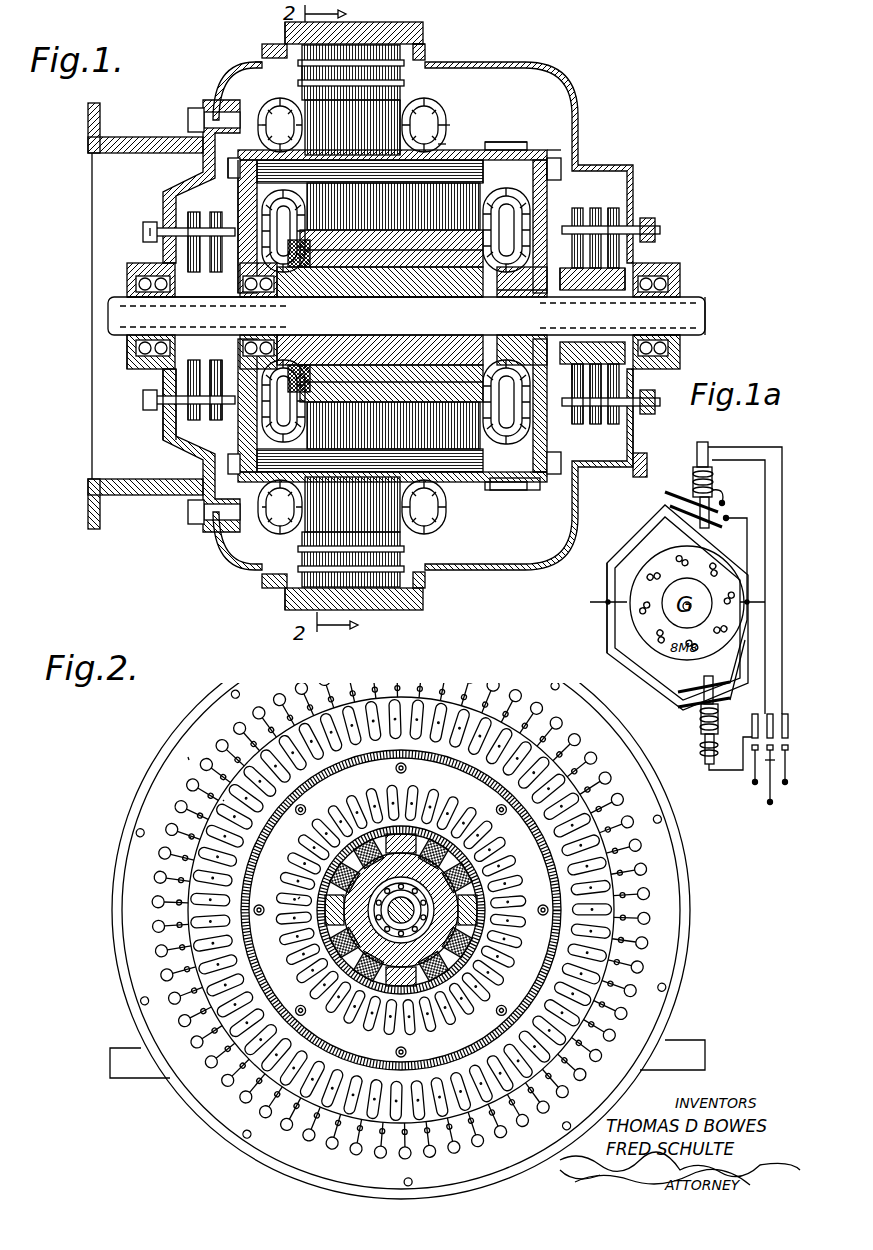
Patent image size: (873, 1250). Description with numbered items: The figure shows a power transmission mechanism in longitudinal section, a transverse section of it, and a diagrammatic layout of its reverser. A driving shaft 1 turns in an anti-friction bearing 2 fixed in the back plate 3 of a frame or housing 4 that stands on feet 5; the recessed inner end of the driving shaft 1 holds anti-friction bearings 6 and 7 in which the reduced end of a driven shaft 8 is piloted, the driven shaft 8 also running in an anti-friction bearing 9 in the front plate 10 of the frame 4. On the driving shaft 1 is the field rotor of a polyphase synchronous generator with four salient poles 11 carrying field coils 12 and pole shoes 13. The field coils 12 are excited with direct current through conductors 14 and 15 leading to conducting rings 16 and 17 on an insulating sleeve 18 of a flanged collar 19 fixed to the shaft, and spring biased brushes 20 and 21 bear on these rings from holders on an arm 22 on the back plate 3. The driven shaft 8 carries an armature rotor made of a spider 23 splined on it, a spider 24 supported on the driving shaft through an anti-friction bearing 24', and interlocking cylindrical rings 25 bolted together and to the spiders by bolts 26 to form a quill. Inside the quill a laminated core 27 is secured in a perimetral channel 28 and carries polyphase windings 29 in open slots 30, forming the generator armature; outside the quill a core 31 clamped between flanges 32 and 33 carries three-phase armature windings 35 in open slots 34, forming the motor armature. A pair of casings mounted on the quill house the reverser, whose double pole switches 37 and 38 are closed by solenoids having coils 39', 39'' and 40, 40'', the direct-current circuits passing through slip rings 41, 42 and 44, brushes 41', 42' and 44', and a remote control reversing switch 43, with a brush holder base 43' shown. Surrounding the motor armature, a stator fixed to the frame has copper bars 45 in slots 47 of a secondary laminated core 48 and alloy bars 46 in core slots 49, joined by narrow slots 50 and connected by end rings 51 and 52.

In FIG. 1, the driving shaft 1 is at (112, 316).
In FIG. 1, the anti-friction bearing 2 is at (130, 345).
In FIG. 1, the back plate 3 is at (160, 378).
In FIG. 1, the frame or housing 4 is at (290, 596).
In FIG. 2, the frame or housing 4 is at (412, 910).
In FIG. 2, the feet 5 is at (132, 1062).
In FIG. 1, the anti-friction bearing 6 is at (365, 298).
In FIG. 2, the anti-friction bearing 6 is at (468, 926).
In FIG. 1, the anti-friction bearing 7 is at (428, 298).
In FIG. 2, the anti-friction bearing 7 is at (470, 860).
In FIG. 1, the driven shaft 8 is at (690, 309).
In FIG. 2, the driven shaft 8 is at (478, 905).
In FIG. 1, the anti-friction bearing 9 is at (680, 352).
In FIG. 1, the front plate 10 is at (640, 450).
In FIG. 1, the salient poles 11 is at (572, 372).
In FIG. 2, the salient poles 11 is at (300, 897).
In FIG. 1, the field coils 12 is at (574, 380).
In FIG. 2, the field coils 12 is at (300, 934).
In FIG. 1, the pole shoes 13 is at (578, 380).
In FIG. 2, the pole shoes 13 is at (312, 872).
In FIG. 1, the conductor 14 is at (335, 311).
In FIG. 1, the conductor 15 is at (162, 311).
In FIG. 1, the conducting ring 16 is at (218, 372).
In FIG. 1, the conducting ring 17 is at (194, 372).
In FIG. 1, the insulating sleeve 18 is at (210, 380).
In FIG. 1, the flanged collar 19 is at (170, 400).
In FIG. 1, the spring biased brush 20 is at (207, 311).
In FIG. 1, the spring biased brush 21 is at (190, 270).
In FIG. 1, the arm 22 is at (182, 232).
In FIG. 1, the spider 23 is at (548, 482).
In FIG. 1, the spider 24 is at (209, 226).
In FIG. 1, the anti-friction bearing 24' is at (258, 311).
In FIG. 1, the cylindrical ring 25 is at (545, 150).
In FIG. 1, the bolts 26 is at (558, 178).
In FIG. 1, the laminated core 27 is at (505, 168).
In FIG. 1, the perimetral channel 28 is at (500, 142).
In FIG. 1, the polyphase windings 29 is at (518, 297).
In FIG. 2, the open slots 30 is at (452, 812).
In FIG. 1, the core 31 is at (424, 116).
In FIG. 1, the flange 32 is at (405, 148).
In FIG. 1, the flange 33 is at (300, 112).
In FIG. 2, the open slots 34 is at (593, 943).
In FIG. 1, the three-phase armature windings 35 is at (440, 128).
In FIG. 1A, the double pole switch 37 is at (678, 698).
In FIG. 1A, the double pole switch 38 is at (668, 494).
In FIG. 1A, the solenoid coil 39' is at (686, 714).
In FIG. 1A, the solenoid coil 39'' is at (697, 762).
In FIG. 1A, the solenoid 40 is at (730, 546).
In FIG. 1A, the solenoid coil 40'' is at (724, 474).
In FIG. 1, the slip ring 41 is at (610, 394).
In FIG. 1A, the slip ring 41 is at (766, 694).
In FIG. 1, the brush 41' is at (655, 238).
In FIG. 1, the slip ring 42 is at (610, 394).
In FIG. 1A, the slip ring 42 is at (766, 758).
In FIG. 1, the brush 42' is at (611, 296).
In FIG. 1, the remote control reversing switch 43 is at (608, 403).
In FIG. 1A, the remote control reversing switch 43 is at (752, 808).
In FIG. 1, the brush holder base 43' is at (576, 296).
In FIG. 1A, the slip ring 44 is at (733, 760).
In FIG. 1A, the brush 44' is at (753, 788).
In FIG. 1, the copper bars 45 is at (425, 62).
In FIG. 1, the alloy bars 46 is at (262, 62).
In FIG. 2, the slots 47 is at (213, 748).
In FIG. 2, the secondary laminated core 48 is at (188, 760).
In FIG. 2, the core slots 49 is at (223, 800).
In FIG. 2, the narrow slots 50 is at (190, 837).
In FIG. 1, the end ring 51 is at (402, 82).
In FIG. 1, the end ring 52 is at (288, 40).